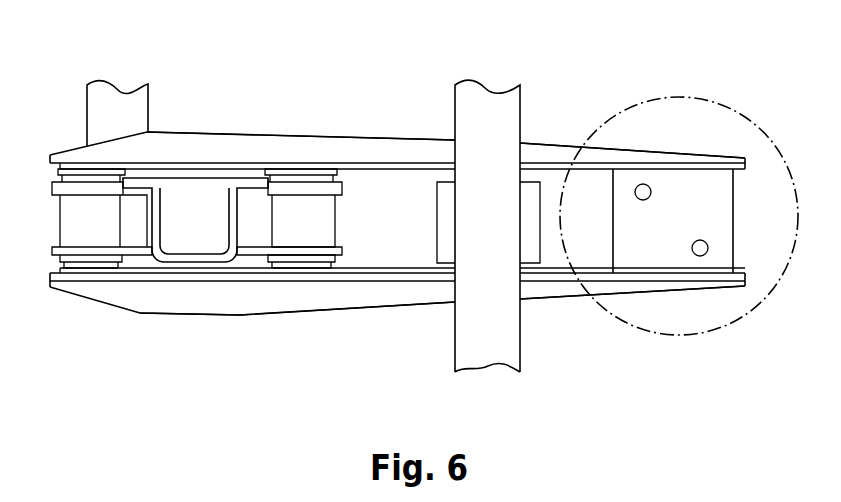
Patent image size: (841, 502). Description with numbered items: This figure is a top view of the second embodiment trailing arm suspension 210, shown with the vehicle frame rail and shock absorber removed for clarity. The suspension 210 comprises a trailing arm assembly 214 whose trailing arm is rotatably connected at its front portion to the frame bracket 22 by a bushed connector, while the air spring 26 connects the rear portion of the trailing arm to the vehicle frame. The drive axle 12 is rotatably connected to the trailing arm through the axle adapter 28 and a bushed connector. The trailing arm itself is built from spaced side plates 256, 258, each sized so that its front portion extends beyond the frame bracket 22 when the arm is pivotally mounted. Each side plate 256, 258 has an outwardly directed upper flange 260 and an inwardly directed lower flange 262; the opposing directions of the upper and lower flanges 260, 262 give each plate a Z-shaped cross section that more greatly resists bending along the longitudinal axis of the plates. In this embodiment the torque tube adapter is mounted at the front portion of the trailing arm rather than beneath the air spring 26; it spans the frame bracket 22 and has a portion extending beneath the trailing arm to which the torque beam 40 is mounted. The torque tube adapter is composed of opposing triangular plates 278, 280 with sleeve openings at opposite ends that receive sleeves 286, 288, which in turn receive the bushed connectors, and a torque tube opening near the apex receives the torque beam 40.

The drive axle 12 is at (521, 340).
The frame bracket 22 is at (239, 219).
The air spring 26 is at (692, 334).
The axle adapter 28 is at (440, 264).
The torque beam 40 is at (85, 123).
The second embodiment trailing arm suspension 210 is at (607, 39).
The trailing arm assembly 214 is at (560, 150).
The side plate 256 is at (145, 285).
The side plate 258 is at (157, 158).
The upper flange 260 is at (392, 135).
The lower flange 262 is at (183, 171).
The opposing plate 278 is at (265, 258).
The opposing plate 280 is at (310, 190).
The sleeve 286 is at (97, 263).
The sleeve 288 is at (287, 262).